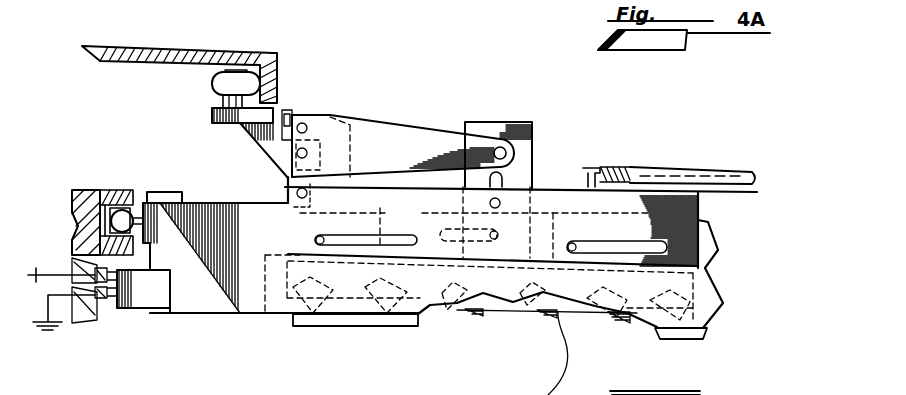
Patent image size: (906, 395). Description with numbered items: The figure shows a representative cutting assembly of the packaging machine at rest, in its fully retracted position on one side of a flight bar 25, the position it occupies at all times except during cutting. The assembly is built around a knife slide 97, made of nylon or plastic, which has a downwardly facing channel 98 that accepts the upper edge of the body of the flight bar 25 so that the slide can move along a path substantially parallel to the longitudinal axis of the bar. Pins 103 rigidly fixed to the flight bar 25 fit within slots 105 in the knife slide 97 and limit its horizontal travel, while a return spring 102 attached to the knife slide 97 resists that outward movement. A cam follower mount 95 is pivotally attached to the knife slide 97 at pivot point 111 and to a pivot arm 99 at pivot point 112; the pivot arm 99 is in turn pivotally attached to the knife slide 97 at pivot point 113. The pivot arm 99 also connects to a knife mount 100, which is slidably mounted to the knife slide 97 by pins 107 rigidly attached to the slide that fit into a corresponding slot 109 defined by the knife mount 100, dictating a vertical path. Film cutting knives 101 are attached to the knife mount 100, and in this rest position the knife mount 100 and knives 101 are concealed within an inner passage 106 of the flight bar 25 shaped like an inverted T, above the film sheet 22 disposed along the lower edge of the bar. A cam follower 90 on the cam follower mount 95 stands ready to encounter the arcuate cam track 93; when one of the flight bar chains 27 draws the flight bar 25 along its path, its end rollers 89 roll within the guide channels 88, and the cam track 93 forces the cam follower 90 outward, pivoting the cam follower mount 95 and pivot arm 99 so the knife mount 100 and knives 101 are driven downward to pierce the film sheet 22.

The film sheet 22 is at (376, 325).
The flight bar 25 is at (227, 293).
The flight bar chain 27 is at (165, 190).
The guide channel 88 is at (107, 193).
The end roller 89 is at (140, 190).
The cam follower 90 is at (216, 96).
The arcuate cam track 93 is at (278, 55).
The cam follower mount 95 is at (263, 135).
The knife slide 97 is at (555, 197).
The downwardly facing channel 98 is at (320, 210).
The pivot arm 99 is at (387, 140).
The knife mount 100 is at (491, 148).
The film cutting knife 101 is at (480, 317).
The return spring 102 is at (703, 170).
The pin 103 is at (290, 238).
The slot 105 is at (347, 237).
The inner passage 106 is at (264, 290).
The pin 107 is at (494, 233).
The slot 109 is at (502, 178).
The pivot point 111 is at (297, 193).
The pivot point 112 is at (288, 167).
The pivot point 113 is at (303, 127).